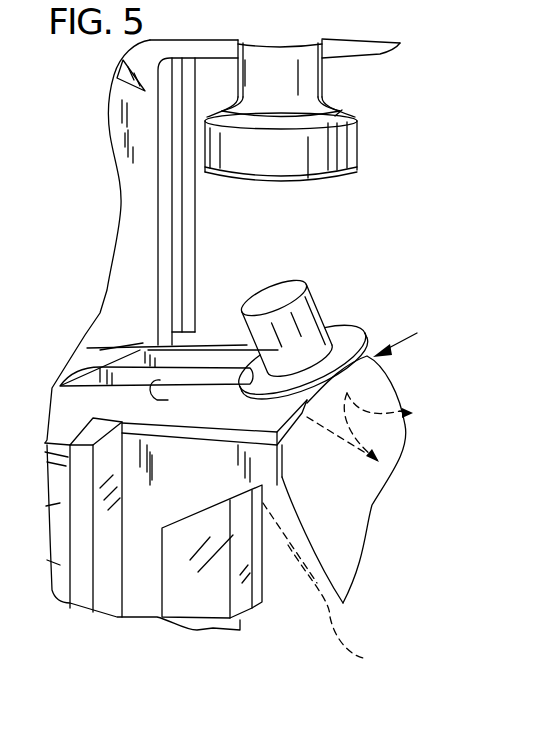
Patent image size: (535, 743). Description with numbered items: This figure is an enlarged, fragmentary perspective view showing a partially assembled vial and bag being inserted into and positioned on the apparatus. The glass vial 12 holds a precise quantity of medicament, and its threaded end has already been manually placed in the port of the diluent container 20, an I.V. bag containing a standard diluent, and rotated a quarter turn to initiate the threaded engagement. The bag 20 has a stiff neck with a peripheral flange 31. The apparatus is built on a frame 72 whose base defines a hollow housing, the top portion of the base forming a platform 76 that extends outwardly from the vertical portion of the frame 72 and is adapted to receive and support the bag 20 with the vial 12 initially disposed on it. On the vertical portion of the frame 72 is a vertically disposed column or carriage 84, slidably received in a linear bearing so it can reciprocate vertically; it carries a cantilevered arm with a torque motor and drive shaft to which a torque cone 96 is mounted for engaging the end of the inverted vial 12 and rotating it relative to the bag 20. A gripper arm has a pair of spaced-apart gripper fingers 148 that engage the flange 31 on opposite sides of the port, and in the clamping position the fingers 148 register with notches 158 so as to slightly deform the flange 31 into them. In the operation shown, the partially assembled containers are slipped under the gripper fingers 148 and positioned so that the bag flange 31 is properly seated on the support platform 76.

The vial 12 is at (318, 279).
The diluent container 20 is at (332, 387).
The peripheral flange 31 is at (370, 340).
The frame 72 is at (205, 233).
The platform 76 is at (229, 343).
The carriage 84 is at (142, 193).
The torque cone 96 is at (333, 147).
The gripper fingers 148 is at (188, 378).
The notches 158 is at (248, 400).